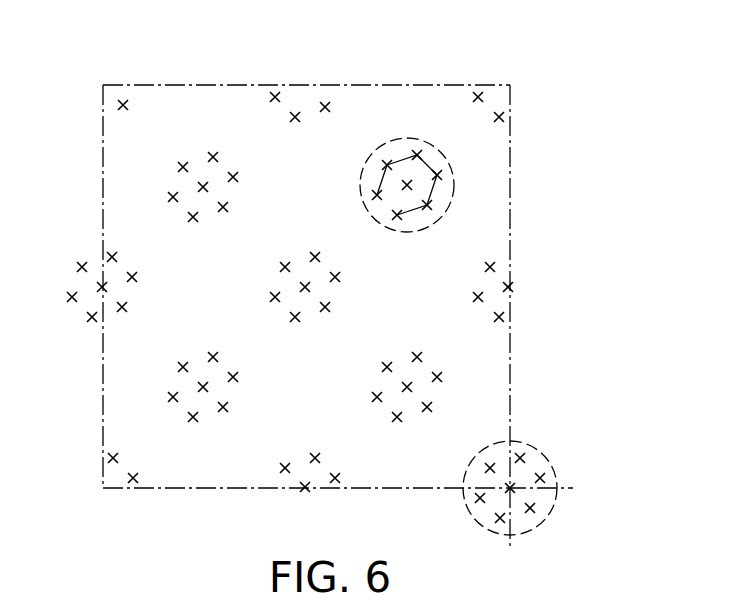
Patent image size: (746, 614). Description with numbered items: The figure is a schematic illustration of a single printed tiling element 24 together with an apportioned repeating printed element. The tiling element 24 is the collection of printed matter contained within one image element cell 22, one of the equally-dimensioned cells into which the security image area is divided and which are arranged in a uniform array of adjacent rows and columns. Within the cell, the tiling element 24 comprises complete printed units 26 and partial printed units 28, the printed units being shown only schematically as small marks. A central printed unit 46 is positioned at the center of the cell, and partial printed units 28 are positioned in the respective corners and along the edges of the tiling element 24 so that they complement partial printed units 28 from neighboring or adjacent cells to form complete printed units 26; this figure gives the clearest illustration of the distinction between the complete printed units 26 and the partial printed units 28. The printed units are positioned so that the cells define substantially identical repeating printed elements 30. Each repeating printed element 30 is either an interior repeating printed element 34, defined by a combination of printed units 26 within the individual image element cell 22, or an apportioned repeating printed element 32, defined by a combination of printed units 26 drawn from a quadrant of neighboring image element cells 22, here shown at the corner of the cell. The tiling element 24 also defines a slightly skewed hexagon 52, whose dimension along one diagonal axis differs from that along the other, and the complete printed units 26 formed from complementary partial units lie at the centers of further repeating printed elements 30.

The image element cell 22 is at (510, 238).
The printed tiling element 24 is at (110, 134).
The printed unit 26 is at (123, 105).
The partial printed unit 28 is at (103, 87).
The repeating printed element 30 is at (538, 336).
The apportioned repeating printed element 32 is at (550, 463).
The interior repeating printed element 34 is at (492, 226).
The central printed unit 46 is at (305, 287).
The skewed hexagon 52 is at (415, 207).